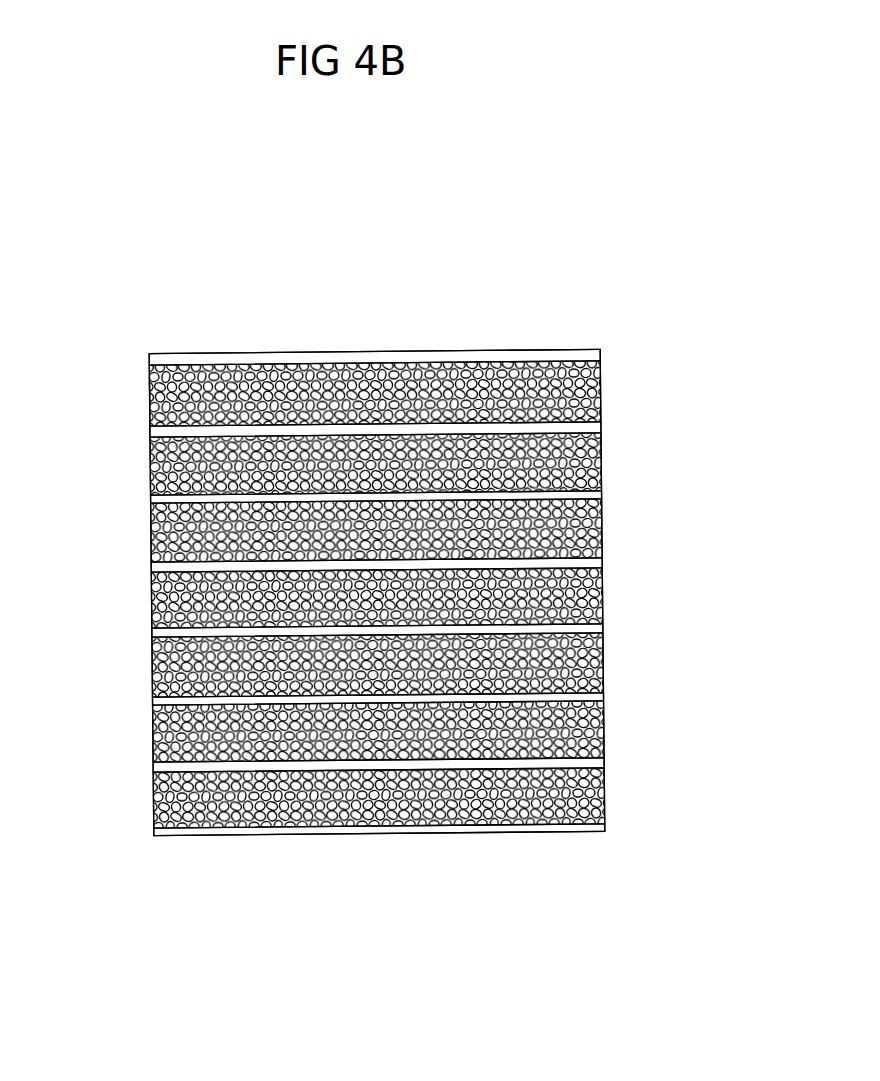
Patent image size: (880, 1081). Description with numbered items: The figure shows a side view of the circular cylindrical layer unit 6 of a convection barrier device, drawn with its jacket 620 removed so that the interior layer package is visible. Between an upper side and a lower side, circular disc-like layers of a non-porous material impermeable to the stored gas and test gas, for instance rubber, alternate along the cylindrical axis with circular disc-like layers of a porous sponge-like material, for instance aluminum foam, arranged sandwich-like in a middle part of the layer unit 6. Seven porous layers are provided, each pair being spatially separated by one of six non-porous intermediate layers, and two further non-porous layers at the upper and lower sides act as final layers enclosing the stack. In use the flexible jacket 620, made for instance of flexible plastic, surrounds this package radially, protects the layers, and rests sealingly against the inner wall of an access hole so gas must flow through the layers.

The layer unit 6 is at (377, 539).
The flexible jacket 620 is at (151, 392).